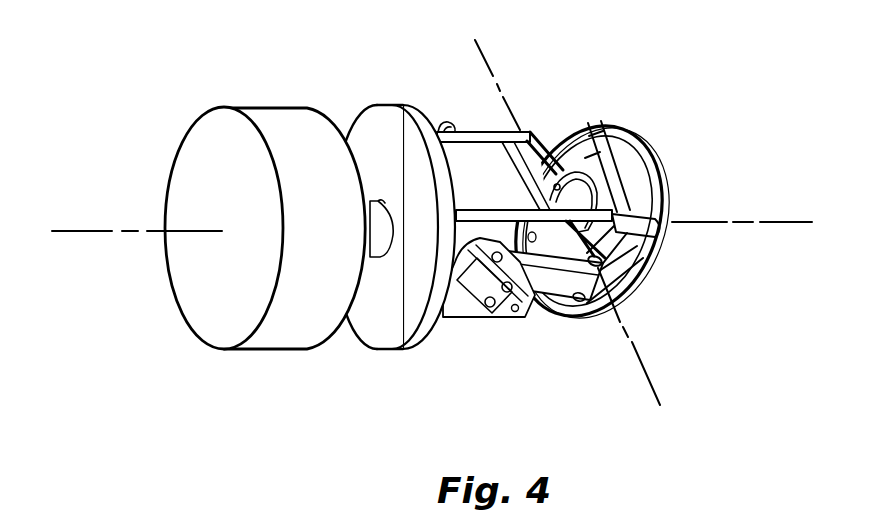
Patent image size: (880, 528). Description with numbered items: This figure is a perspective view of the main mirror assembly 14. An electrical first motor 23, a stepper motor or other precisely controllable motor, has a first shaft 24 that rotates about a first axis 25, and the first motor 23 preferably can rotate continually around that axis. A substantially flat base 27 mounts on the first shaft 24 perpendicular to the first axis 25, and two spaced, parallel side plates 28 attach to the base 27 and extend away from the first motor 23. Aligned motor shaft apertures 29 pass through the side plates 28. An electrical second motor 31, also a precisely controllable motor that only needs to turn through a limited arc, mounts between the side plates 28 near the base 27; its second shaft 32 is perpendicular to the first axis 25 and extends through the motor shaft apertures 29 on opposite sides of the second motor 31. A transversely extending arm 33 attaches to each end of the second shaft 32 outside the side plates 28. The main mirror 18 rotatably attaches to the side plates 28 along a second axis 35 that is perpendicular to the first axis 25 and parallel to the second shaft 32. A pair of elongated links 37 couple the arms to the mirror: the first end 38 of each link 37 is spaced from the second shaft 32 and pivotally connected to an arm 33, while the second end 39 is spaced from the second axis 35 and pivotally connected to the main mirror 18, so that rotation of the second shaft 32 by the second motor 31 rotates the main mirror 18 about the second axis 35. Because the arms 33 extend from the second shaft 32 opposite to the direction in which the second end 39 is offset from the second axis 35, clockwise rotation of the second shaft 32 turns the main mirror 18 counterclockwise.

The main mirror assembly 14 is at (192, 71).
The main mirror 18 is at (672, 203).
The first motor 23 is at (307, 346).
The first shaft 24 is at (380, 250).
The first axis 25 is at (710, 224).
The base 27 is at (438, 317).
The side plates 28 is at (531, 131).
The motor shaft apertures 29 is at (453, 295).
The second motor 31 is at (473, 168).
The second shaft 32 is at (483, 317).
The arm 33 is at (506, 316).
The second axis 35 is at (646, 371).
The link 37 is at (553, 290).
The first end 38 is at (500, 314).
The second end 39 is at (597, 302).